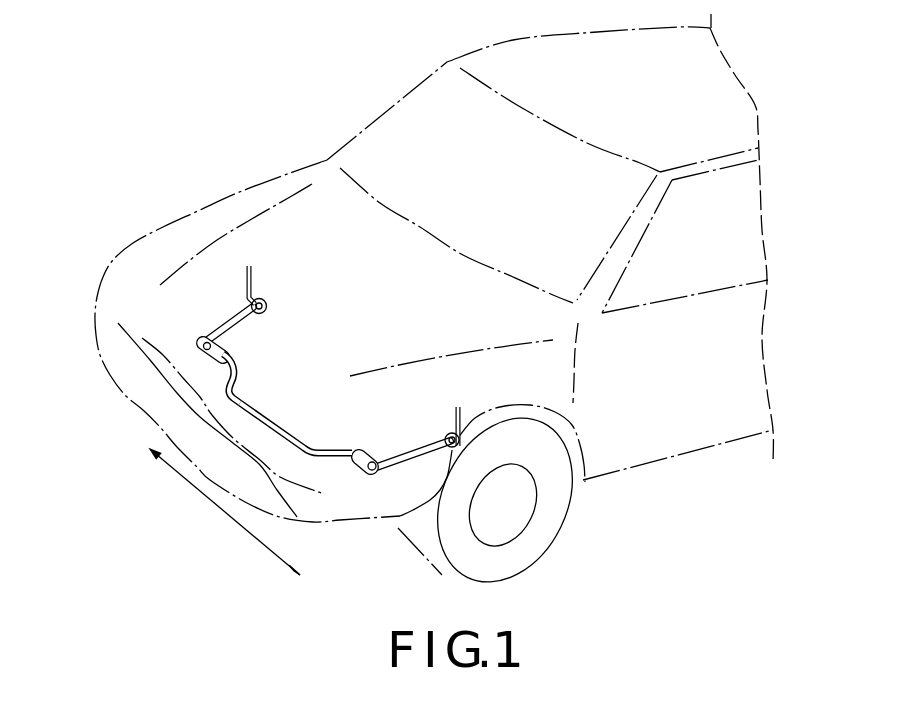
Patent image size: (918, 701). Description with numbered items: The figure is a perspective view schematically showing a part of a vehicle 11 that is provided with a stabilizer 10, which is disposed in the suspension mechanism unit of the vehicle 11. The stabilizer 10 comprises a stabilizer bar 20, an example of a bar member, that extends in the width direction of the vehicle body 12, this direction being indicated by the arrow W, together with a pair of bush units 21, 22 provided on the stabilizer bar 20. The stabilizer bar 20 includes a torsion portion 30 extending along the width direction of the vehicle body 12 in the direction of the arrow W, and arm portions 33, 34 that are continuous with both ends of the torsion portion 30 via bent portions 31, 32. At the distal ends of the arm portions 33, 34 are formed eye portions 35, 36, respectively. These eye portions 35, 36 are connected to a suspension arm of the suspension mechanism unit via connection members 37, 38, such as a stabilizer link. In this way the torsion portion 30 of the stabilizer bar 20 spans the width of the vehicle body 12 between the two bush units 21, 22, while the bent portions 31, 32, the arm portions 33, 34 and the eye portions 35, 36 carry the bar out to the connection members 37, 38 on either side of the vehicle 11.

The stabilizer 10 is at (296, 409).
The vehicle 11 is at (434, 309).
The vehicle body 12 is at (606, 483).
The stabilizer bar 20 is at (301, 457).
The bush unit 21 is at (233, 346).
The bush unit 22 is at (368, 447).
The torsion portion 30 is at (275, 422).
The bent portion 31 is at (198, 341).
The bent portion 32 is at (374, 474).
The arm portion 33 is at (222, 326).
The arm portion 34 is at (403, 448).
The eye portion 35 is at (267, 301).
The eye portion 36 is at (445, 430).
The connection member 37 is at (252, 279).
The connection member 38 is at (462, 420).
The arrow W is at (218, 511).